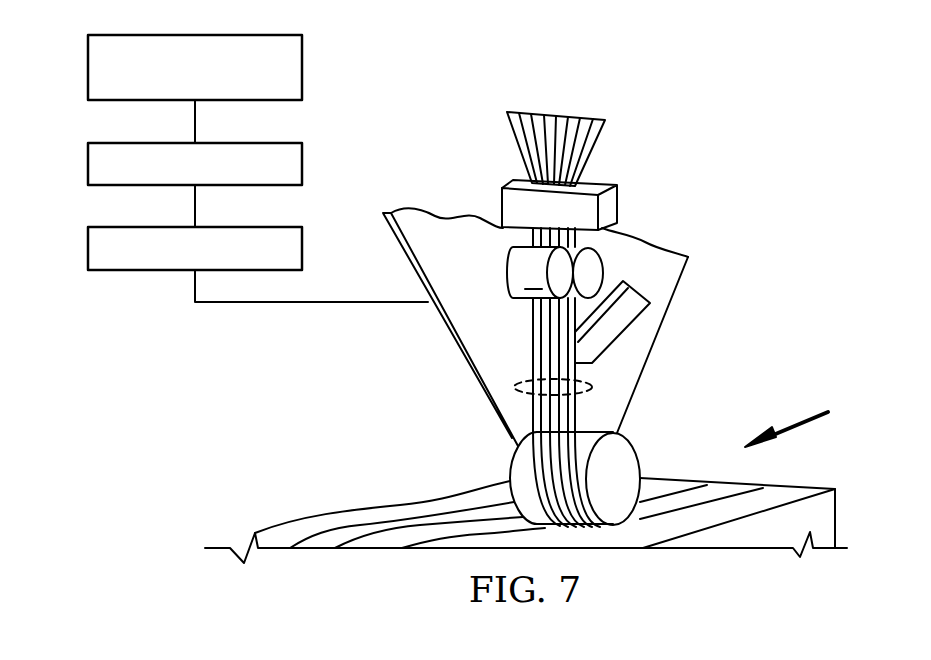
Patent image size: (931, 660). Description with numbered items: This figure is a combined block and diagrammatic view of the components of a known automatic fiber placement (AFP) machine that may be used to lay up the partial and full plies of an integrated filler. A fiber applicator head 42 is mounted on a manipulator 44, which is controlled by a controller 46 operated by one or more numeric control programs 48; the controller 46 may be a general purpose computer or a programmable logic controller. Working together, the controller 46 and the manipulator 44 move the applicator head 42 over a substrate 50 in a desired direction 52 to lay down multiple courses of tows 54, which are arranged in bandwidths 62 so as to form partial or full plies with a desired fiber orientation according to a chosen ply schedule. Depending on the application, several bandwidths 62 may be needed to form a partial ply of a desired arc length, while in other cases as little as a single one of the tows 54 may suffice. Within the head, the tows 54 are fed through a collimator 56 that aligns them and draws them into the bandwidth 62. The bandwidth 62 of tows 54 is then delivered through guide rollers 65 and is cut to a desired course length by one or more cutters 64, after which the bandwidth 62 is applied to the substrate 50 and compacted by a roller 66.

The fiber applicator head 42 is at (675, 127).
The manipulator 44 is at (88, 250).
The controller 46 is at (88, 153).
The numeric control programs 48 is at (88, 68).
The substrate 50 is at (413, 513).
The desired direction 52 is at (808, 424).
The tows 54 is at (593, 157).
The collimator 56 is at (620, 203).
The bandwidth 62 is at (520, 386).
The cutters 64 is at (641, 284).
The guide rollers 65 is at (507, 272).
The roller 66 is at (636, 460).